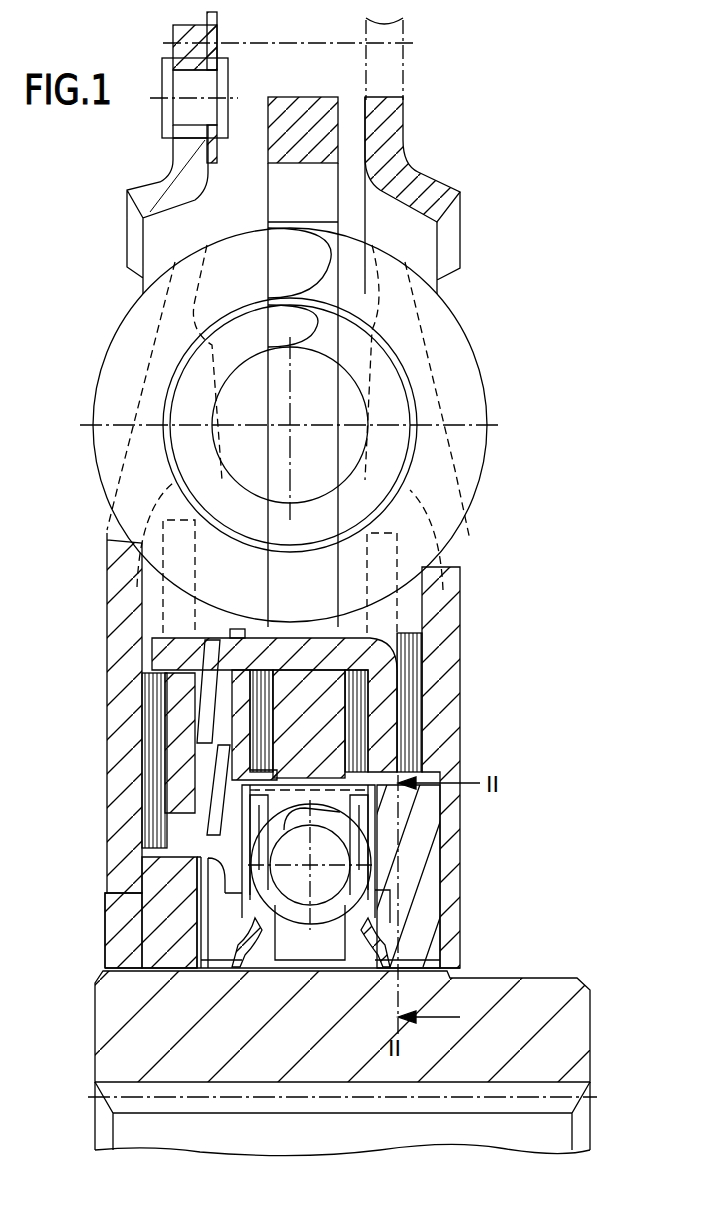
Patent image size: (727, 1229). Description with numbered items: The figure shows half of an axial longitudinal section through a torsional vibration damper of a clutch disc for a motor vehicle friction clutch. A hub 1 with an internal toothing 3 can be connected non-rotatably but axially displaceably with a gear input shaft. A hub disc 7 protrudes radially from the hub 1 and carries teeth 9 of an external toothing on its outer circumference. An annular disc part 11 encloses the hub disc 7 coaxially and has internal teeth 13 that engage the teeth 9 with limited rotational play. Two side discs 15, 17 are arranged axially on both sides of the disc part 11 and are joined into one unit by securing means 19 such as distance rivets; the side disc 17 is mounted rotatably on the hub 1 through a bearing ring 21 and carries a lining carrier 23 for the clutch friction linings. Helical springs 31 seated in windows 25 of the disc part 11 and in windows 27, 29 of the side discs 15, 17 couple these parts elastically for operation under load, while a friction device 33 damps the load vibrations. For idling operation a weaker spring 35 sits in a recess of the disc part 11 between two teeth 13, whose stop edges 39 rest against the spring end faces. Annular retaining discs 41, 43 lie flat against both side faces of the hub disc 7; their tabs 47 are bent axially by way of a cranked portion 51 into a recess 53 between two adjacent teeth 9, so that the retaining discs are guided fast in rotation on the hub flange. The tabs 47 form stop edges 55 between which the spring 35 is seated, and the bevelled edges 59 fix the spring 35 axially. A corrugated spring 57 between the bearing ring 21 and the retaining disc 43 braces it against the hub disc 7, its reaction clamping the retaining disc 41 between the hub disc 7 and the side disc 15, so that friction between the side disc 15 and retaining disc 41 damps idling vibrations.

The hub 1 is at (575, 1055).
The internal toothing 3 is at (572, 1105).
The hub disc 7 is at (340, 855).
The teeth 9 is at (456, 798).
The disc part 11 is at (312, 108).
The teeth 13 is at (335, 855).
The side disc 15 is at (450, 585).
The side disc 17 is at (118, 580).
The securing means 19 is at (415, 40).
The bearing ring 21 is at (107, 900).
The lining carrier 23 is at (207, 18).
The windows 25 is at (325, 385).
The windows 27 is at (400, 450).
The windows 29 is at (170, 418).
The helical springs 31 is at (118, 350).
The friction device 33 is at (428, 668).
The spring 35 is at (210, 835).
The stop edges 39 is at (308, 948).
The retaining disc 41 is at (380, 918).
The retaining disc 43 is at (195, 945).
The tabs 47 is at (368, 805).
The cranked portion 51 is at (370, 938).
The recess 53 is at (368, 958).
The stop edges 55 is at (362, 818).
The corrugated spring 57 is at (200, 920).
The edges 59 is at (390, 882).